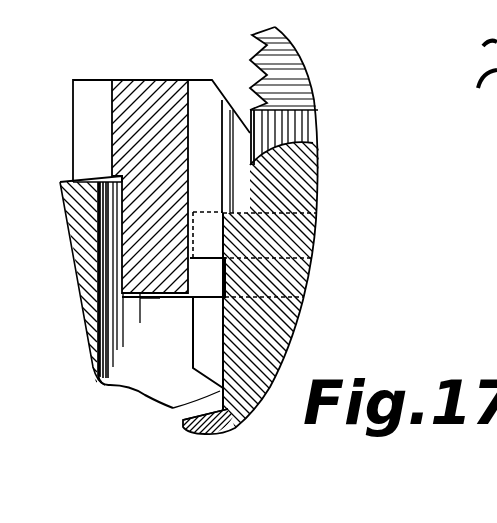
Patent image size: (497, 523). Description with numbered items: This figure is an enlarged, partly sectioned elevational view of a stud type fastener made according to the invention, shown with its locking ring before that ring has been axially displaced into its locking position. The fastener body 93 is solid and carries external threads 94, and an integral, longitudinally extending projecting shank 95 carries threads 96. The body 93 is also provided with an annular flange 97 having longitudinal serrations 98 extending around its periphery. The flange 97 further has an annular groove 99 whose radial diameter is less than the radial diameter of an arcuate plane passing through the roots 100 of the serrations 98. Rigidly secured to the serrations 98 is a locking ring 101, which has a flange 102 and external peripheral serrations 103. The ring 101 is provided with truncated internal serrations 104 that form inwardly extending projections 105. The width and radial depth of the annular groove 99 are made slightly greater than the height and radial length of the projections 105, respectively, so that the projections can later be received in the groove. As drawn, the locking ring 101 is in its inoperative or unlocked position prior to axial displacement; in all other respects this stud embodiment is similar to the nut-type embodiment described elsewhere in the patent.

The fastener body 93 is at (315, 248).
The external threads 94 is at (215, 432).
The projecting shank 95 is at (297, 131).
The threads 96 is at (252, 36).
The annular flange 97 is at (180, 407).
The longitudinal serrations 98 is at (202, 322).
The annular groove 99 is at (190, 297).
The roots 100 is at (217, 327).
The locking ring 101 is at (157, 79).
The flange 102 is at (93, 181).
The external peripheral serrations 103 is at (80, 97).
The truncated internal serrations 104 is at (205, 97).
The inwardly extending projections 105 is at (222, 270).